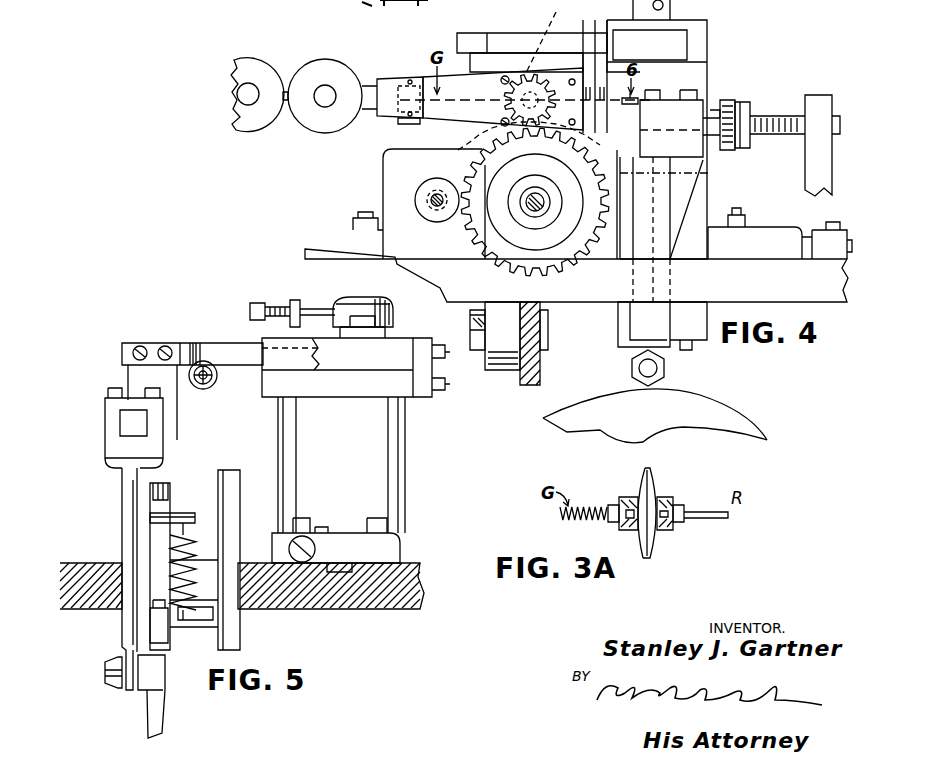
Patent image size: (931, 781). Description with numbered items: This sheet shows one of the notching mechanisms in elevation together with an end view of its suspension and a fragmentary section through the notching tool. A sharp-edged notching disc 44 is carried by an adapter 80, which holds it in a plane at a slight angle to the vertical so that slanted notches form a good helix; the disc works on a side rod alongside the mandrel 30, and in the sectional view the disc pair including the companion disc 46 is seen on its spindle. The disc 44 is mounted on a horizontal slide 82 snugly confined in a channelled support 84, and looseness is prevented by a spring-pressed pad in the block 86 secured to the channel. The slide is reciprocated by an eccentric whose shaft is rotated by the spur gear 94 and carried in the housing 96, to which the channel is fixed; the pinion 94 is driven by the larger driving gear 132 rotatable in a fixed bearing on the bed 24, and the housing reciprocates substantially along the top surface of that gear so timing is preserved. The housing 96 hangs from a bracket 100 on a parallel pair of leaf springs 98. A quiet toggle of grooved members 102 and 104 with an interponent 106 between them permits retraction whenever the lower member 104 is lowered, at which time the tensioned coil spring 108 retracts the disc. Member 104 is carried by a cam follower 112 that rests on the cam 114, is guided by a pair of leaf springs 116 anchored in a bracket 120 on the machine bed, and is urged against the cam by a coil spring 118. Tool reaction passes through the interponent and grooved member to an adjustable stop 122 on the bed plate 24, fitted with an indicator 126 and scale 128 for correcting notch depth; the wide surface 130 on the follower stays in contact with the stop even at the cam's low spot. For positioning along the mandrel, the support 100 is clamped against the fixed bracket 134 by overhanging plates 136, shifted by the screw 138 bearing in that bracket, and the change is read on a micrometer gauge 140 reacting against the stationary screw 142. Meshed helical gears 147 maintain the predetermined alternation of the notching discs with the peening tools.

In FIG. 4, the bed plate 24 is at (838, 292).
In FIG. 5, the bed plate 24 is at (393, 610).
In FIG. 4, the mandrel 30 is at (287, 105).
In FIG. 4, the notching disc 44 is at (341, 52).
In FIG. 3A, the notching disc 44 is at (660, 484).
In FIG. 4, the disc 46 is at (236, 78).
In FIG. 3A, the disc 46 is at (638, 484).
In FIG. 3A, the adapter 80 is at (658, 531).
In FIG. 4, the slide 82 is at (370, 88).
In FIG. 3A, the slide 82 is at (673, 499).
In FIG. 4, the channelled support 84 is at (392, 78).
In FIG. 4, the block 86 is at (400, 122).
In FIG. 4, the spur gear 94 is at (542, 37).
In FIG. 4, the housing 96 is at (505, 82).
In FIG. 4, the leaf springs 98 is at (450, 72).
In FIG. 5, the leaf springs 98 is at (130, 373).
In FIG. 4, the bracket 100 is at (538, 24).
In FIG. 5, the bracket 100 is at (237, 348).
In FIG. 4, the grooved member 102 is at (595, 141).
In FIG. 4, the grooved member 104 is at (636, 139).
In FIG. 5, the grooved member 104 is at (163, 426).
In FIG. 4, the interponent 106 is at (632, 98).
In FIG. 5, the coil spring 108 is at (198, 391).
In FIG. 4, the cam follower 112 is at (660, 252).
In FIG. 5, the cam follower 112 is at (122, 534).
In FIG. 4, the cam 114 is at (658, 419).
In FIG. 5, the cam 114 is at (150, 709).
In FIG. 4, the leaf springs 116 is at (662, 271).
In FIG. 5, the leaf springs 116 is at (185, 518).
In FIG. 5, the coil spring 118 is at (196, 576).
In FIG. 4, the bracket 120 is at (700, 247).
In FIG. 5, the bracket 120 is at (280, 586).
In FIG. 4, the adjustable stop 122 is at (766, 118).
In FIG. 4, the indicator 126 is at (740, 100).
In FIG. 4, the scale 128 is at (745, 100).
In FIG. 4, the surface 130 is at (712, 136).
In FIG. 4, the driving gear 132 is at (462, 150).
In FIG. 5, the bracket 134 is at (358, 449).
In FIG. 5, the overhanging plates 136 is at (318, 353).
In FIG. 5, the screw 138 is at (440, 393).
In FIG. 4, the micrometer gauge 140 is at (680, 10).
In FIG. 5, the micrometer gauge 140 is at (350, 301).
In FIG. 5, the screw 142 is at (265, 303).
In FIG. 4, the helical gears 147 is at (545, 381).